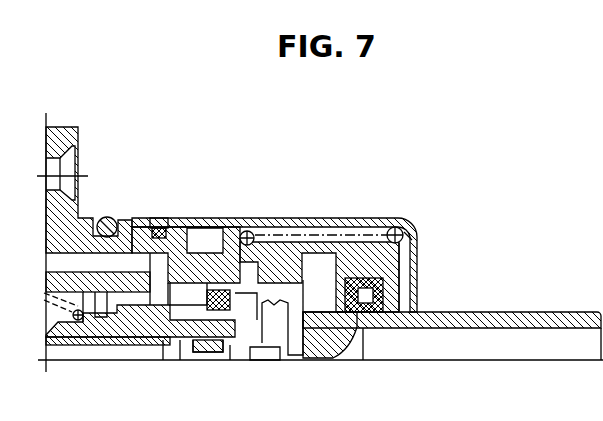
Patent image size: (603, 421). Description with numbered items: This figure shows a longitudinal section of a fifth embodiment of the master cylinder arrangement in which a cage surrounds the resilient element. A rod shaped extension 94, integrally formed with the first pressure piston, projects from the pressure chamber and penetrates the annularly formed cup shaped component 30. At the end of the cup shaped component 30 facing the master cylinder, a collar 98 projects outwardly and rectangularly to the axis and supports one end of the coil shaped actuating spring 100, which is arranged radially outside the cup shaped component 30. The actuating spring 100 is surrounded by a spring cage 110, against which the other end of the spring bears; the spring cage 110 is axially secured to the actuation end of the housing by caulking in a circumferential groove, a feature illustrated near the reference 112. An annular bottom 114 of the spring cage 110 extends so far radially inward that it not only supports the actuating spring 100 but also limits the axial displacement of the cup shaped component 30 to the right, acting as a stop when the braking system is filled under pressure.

The retaining ring 112 is at (158, 222).
The collar 98 is at (246, 231).
The spring cage 110 is at (302, 218).
The actuating spring 100 is at (400, 228).
The annular bottom 114 is at (411, 236).
The cup shaped component 30 is at (380, 263).
The rod shaped extension 94 is at (571, 312).